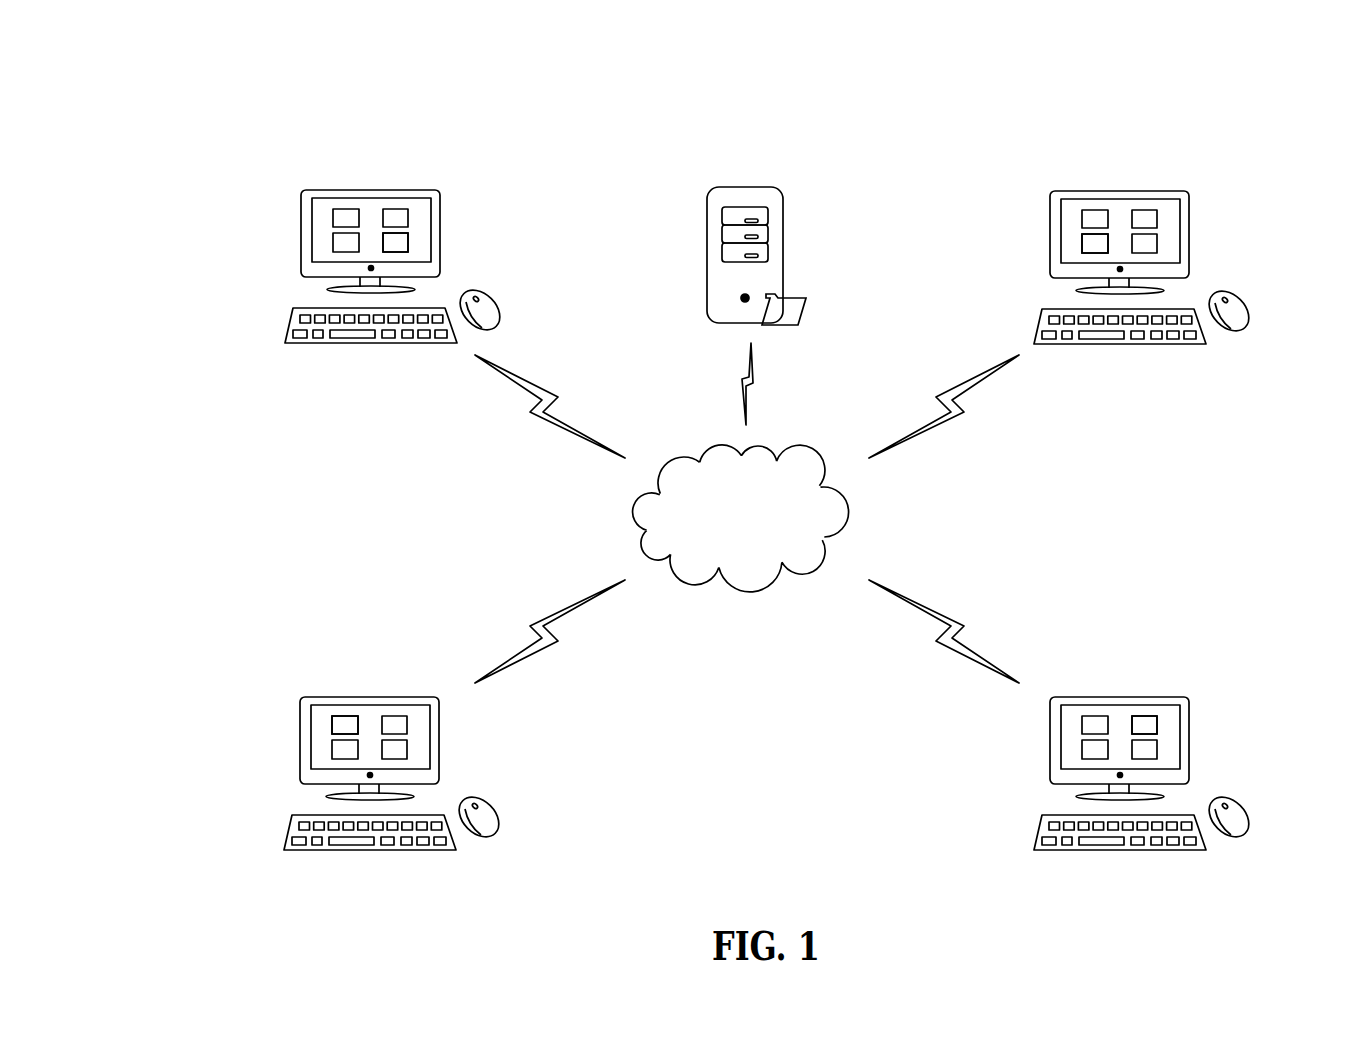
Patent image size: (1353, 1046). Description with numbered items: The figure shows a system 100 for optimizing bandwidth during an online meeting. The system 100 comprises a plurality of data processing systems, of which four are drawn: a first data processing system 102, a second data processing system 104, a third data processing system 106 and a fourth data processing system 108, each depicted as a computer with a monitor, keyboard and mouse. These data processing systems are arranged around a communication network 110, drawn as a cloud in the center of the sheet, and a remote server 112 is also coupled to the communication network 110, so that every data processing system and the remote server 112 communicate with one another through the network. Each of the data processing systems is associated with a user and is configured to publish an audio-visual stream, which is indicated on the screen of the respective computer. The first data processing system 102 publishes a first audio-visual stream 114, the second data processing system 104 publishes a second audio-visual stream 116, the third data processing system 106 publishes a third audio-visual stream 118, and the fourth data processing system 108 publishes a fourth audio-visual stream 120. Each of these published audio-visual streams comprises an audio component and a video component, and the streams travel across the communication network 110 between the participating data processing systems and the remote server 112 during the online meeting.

The system 100 is at (700, 445).
The first data processing system 102 is at (349, 756).
The second data processing system 104 is at (1161, 759).
The third data processing system 106 is at (1161, 254).
The fourth data processing system 108 is at (350, 249).
The communication network 110 is at (765, 527).
The remote server 112 is at (703, 240).
The first audio-visual stream 114 is at (304, 684).
The second audio-visual stream 116 is at (1102, 684).
The third audio-visual stream 118 is at (1034, 209).
The fourth audio-visual stream 120 is at (452, 203).